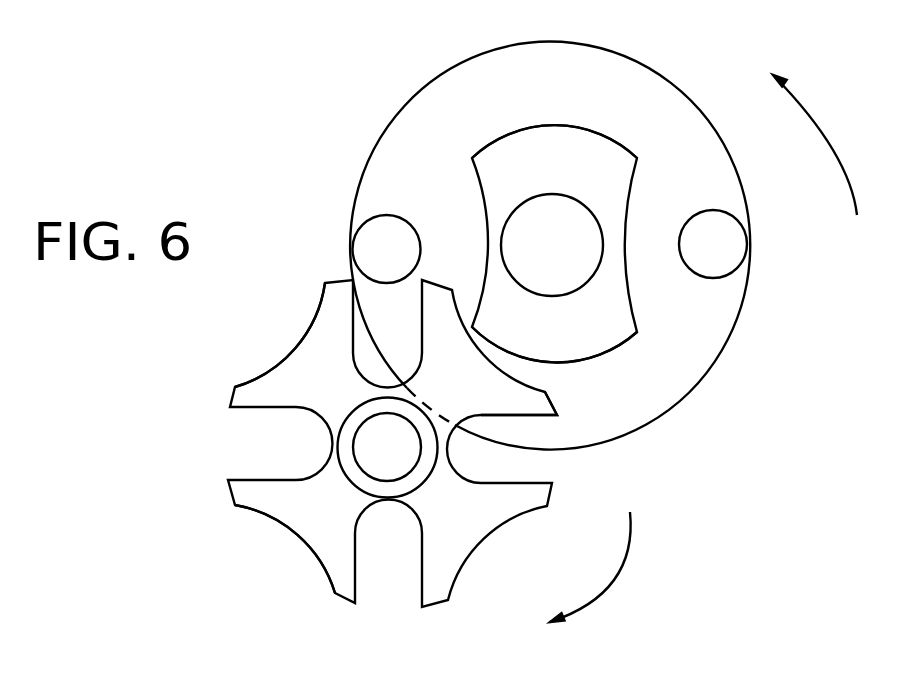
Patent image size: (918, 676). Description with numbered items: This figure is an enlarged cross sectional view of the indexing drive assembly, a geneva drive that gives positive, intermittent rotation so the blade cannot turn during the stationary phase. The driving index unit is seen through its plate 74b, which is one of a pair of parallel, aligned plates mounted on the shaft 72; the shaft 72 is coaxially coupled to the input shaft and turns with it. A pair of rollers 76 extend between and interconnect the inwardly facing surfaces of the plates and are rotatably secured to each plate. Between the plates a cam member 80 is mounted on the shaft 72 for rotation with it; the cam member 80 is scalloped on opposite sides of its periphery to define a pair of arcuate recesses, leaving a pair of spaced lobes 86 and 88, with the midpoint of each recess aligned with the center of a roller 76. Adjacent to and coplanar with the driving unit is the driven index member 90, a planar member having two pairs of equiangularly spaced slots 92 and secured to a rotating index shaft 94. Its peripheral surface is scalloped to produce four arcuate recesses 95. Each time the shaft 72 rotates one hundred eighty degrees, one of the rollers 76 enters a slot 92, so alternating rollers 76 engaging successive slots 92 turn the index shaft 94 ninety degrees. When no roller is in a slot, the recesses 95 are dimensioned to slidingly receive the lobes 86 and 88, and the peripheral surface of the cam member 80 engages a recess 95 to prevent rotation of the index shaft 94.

The plate 74b is at (448, 170).
The rollers 76 is at (377, 243).
The shaft 72 is at (555, 264).
The cam member 80 is at (562, 170).
The lobe 88 is at (612, 135).
The lobe 86 is at (528, 352).
The driven index member 90 is at (456, 526).
The slots 92 is at (335, 343).
The index shaft 94 is at (390, 453).
The arcuate recesses 95 is at (292, 532).